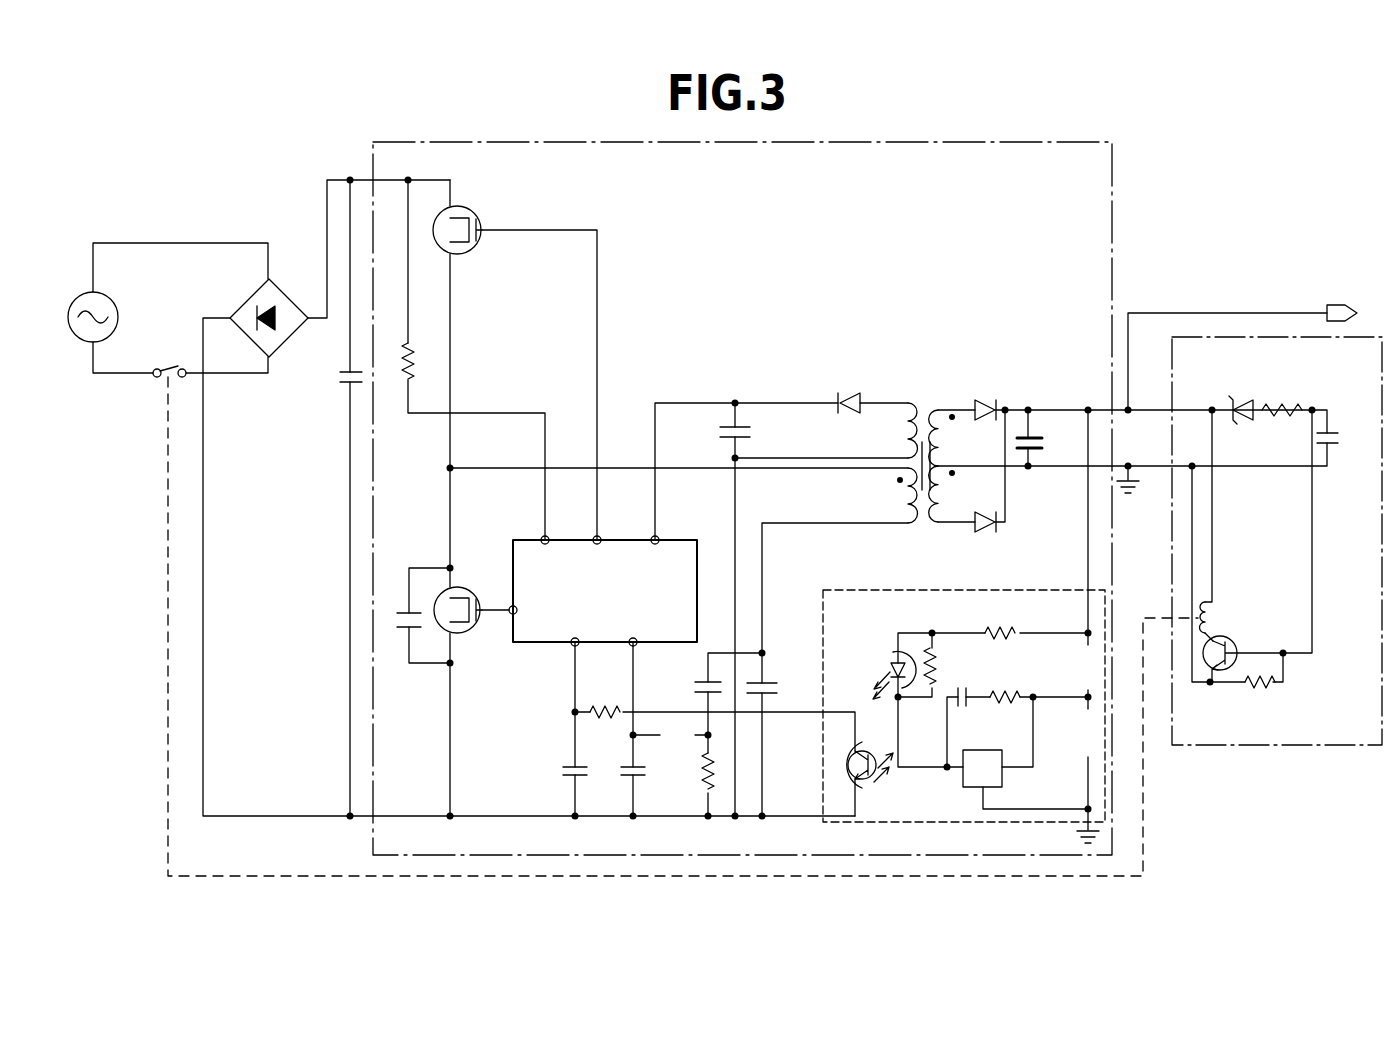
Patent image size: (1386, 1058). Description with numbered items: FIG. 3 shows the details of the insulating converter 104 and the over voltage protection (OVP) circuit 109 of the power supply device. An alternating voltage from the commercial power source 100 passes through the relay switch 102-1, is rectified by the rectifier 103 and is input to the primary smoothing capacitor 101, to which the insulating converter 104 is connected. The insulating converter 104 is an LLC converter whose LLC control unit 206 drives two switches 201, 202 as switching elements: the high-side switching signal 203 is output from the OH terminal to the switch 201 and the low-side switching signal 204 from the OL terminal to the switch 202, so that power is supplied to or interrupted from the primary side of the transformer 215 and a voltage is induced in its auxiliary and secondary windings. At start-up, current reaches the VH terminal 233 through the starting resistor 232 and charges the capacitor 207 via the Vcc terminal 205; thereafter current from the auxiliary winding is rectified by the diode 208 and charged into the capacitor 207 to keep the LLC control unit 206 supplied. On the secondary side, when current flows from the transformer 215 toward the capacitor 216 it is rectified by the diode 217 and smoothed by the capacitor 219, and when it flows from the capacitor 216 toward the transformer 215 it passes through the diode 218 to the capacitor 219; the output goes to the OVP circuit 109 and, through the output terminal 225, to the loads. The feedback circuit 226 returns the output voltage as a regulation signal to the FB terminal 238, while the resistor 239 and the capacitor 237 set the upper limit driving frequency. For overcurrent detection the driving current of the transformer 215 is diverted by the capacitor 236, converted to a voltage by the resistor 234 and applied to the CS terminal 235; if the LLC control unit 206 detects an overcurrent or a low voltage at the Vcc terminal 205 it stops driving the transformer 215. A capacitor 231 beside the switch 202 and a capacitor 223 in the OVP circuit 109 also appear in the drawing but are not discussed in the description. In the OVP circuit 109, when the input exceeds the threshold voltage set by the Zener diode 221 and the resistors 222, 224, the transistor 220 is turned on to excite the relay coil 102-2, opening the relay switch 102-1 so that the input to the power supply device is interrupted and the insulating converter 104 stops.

The commercial power source 100 is at (117, 305).
The primary smoothing capacitor 101 is at (336, 380).
The relay switch 102-1 is at (168, 367).
The relay coil 102-2 is at (1210, 601).
The rectifier 103 is at (243, 303).
The insulating converter 104 is at (975, 141).
The OVP circuit 109 is at (1295, 746).
The switch 201 is at (469, 216).
The switch 202 is at (465, 587).
The switching signal 203 is at (600, 535).
The switching signal 204 is at (509, 615).
The Vcc terminal 205 is at (658, 535).
The LLC control unit 206 is at (540, 645).
The capacitor 207 is at (750, 434).
The diode 208 is at (846, 398).
The transformer 215 is at (925, 424).
The capacitor 216 is at (766, 682).
The diode 217 is at (984, 404).
The diode 218 is at (973, 530).
The capacitor 219 is at (1033, 434).
The transistor 220 is at (1238, 642).
The Zener diode 221 is at (1242, 405).
The resistor 222 is at (1288, 405).
The capacitor 223 is at (1332, 445).
The resistor 224 is at (1256, 685).
The output terminal 225 is at (1337, 304).
The feedback circuit 226 is at (1038, 589).
The capacitor 231 is at (400, 628).
The starting resistor 232 is at (407, 395).
The VH terminal 233 is at (541, 532).
The resistor 234 is at (706, 774).
The CS terminal 235 is at (604, 708).
The capacitor 236 is at (698, 688).
The capacitor 237 is at (565, 772).
The FB terminal 238 is at (568, 644).
The resistor 239 is at (605, 719).